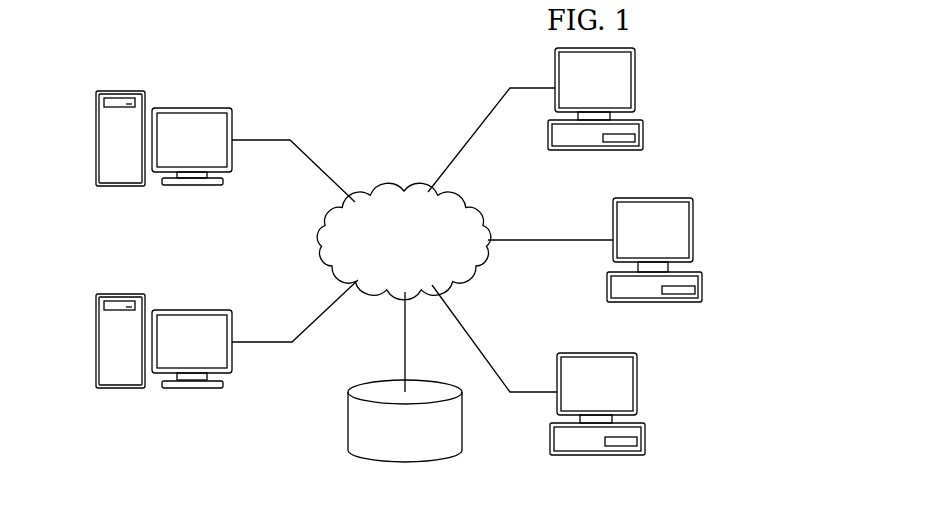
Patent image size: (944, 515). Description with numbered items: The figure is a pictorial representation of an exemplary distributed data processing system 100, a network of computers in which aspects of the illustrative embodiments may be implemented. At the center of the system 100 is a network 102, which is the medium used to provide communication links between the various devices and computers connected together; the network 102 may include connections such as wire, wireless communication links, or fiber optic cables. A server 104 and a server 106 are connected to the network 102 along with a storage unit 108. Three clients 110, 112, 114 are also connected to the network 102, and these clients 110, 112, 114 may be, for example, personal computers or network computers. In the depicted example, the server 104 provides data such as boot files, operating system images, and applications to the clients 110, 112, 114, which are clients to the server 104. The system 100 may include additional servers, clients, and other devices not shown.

The distributed data processing system 100 is at (295, 66).
The network 102 is at (400, 190).
The server 104 is at (96, 140).
The server 106 is at (96, 340).
The storage unit 108 is at (348, 420).
The client 110 is at (643, 133).
The client 112 is at (702, 287).
The client 114 is at (645, 437).